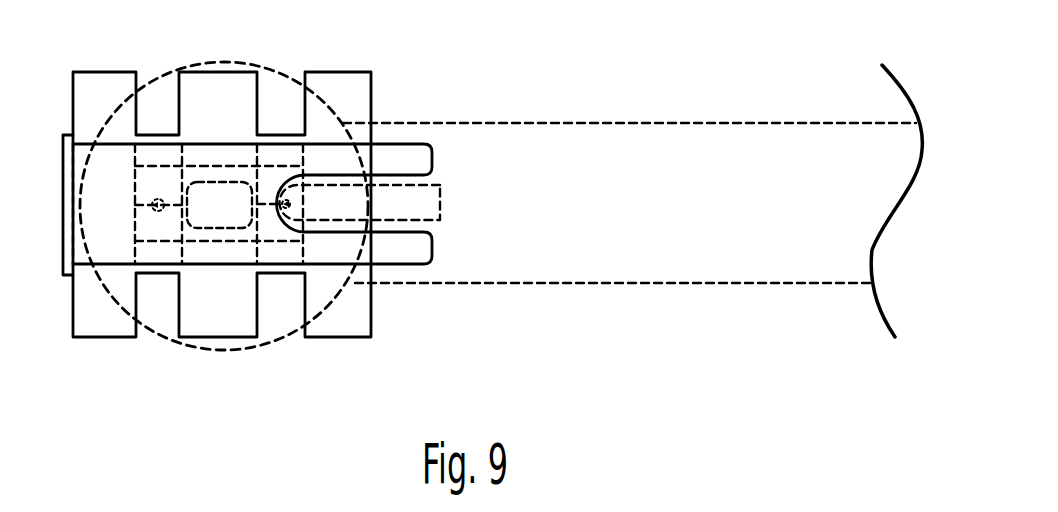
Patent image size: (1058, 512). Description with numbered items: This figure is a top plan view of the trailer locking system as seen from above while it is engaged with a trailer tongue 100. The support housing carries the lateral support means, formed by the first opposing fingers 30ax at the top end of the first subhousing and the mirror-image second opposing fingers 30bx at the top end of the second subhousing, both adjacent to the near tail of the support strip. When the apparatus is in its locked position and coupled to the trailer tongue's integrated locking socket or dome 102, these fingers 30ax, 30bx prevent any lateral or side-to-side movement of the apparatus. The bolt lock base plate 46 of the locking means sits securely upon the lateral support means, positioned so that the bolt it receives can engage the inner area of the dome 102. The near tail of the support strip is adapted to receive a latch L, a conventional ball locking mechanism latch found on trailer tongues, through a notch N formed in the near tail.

The first opposing finger 30ax is at (362, 102).
The second opposing finger 30bx is at (100, 318).
The locking socket or dome 102 is at (280, 335).
The bolt lock base plate 46 is at (236, 218).
The trailer tongue 100 is at (668, 220).
The latch L is at (430, 208).
The notch N is at (455, 202).